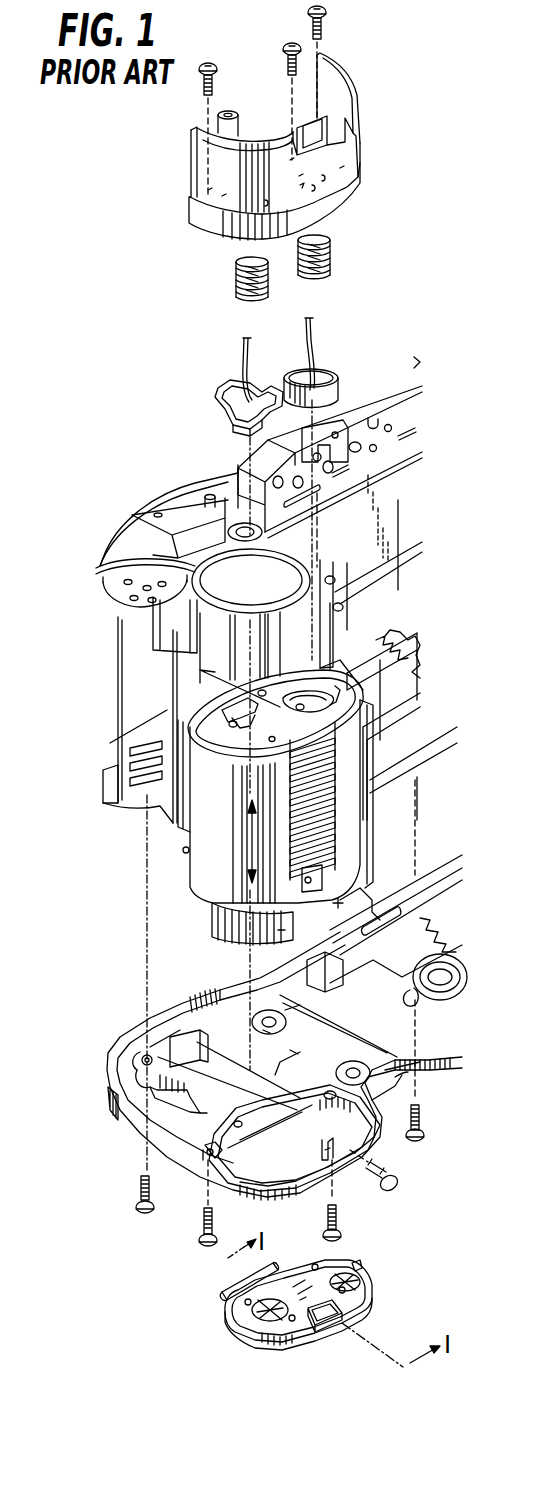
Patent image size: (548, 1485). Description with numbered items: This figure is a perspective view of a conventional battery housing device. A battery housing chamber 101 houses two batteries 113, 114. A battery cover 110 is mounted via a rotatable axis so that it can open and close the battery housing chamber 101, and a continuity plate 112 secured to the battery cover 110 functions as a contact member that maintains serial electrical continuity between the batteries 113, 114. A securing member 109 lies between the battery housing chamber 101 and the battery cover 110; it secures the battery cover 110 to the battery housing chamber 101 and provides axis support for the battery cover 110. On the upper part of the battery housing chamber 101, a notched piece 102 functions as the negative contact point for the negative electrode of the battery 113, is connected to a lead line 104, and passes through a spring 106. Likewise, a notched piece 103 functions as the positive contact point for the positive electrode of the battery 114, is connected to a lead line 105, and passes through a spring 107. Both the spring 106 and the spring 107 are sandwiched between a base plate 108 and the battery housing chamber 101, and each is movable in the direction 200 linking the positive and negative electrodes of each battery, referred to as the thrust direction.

The battery housing chamber 101 is at (214, 832).
The notched piece 102 is at (338, 378).
The notched piece 103 is at (220, 405).
The lead line 104 is at (318, 356).
The lead line 105 is at (243, 358).
The spring 106 is at (332, 262).
The spring 107 is at (234, 283).
The base plate 108 is at (346, 147).
The securing member 109 is at (132, 1121).
The battery cover 110 is at (232, 1323).
The continuity plate 112 is at (256, 1313).
The battery 113 is at (347, 888).
The battery 114 is at (223, 918).
The direction 200 is at (250, 846).